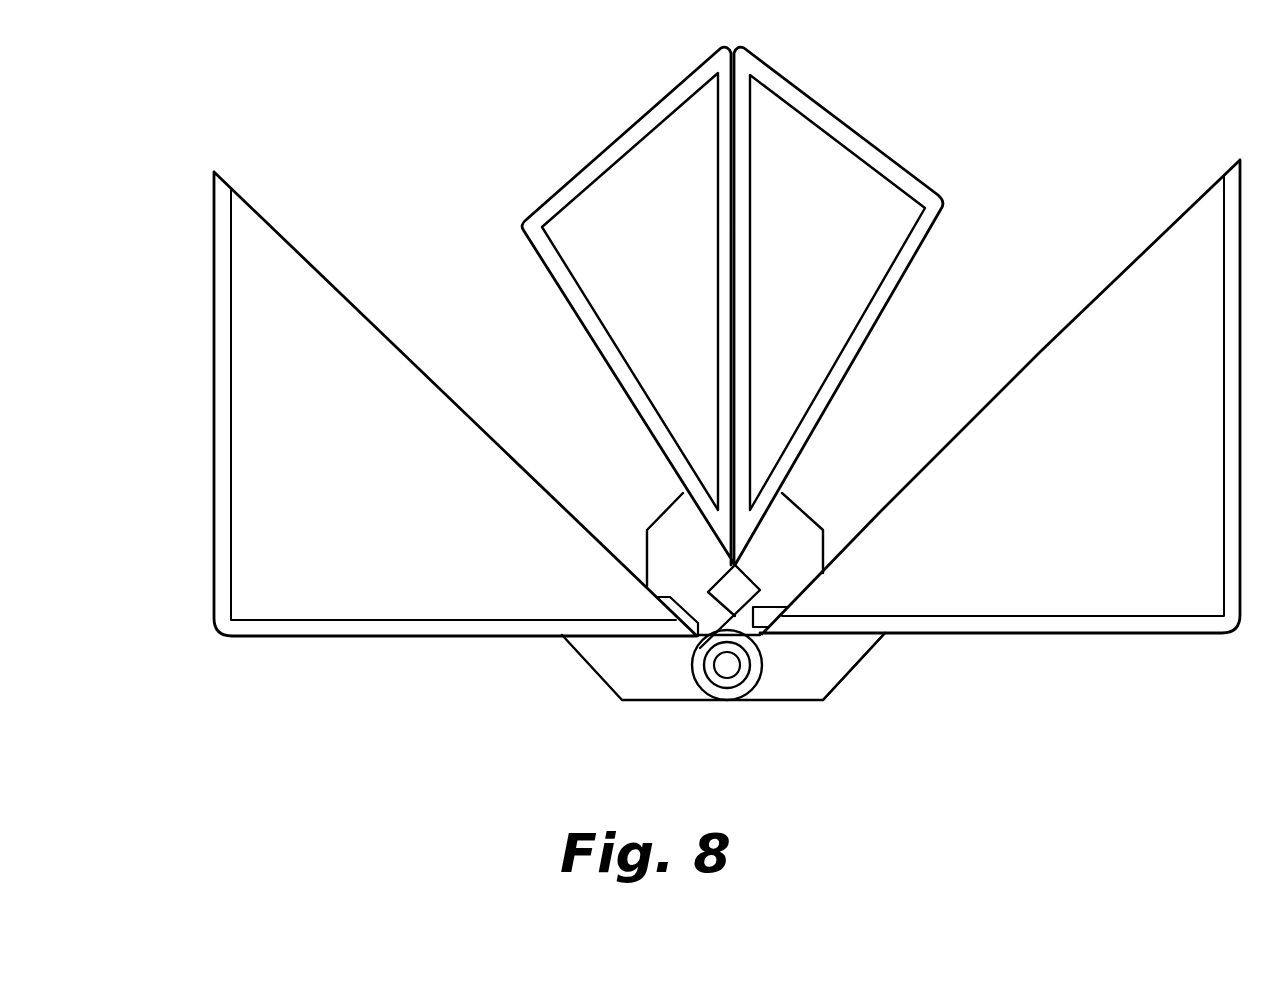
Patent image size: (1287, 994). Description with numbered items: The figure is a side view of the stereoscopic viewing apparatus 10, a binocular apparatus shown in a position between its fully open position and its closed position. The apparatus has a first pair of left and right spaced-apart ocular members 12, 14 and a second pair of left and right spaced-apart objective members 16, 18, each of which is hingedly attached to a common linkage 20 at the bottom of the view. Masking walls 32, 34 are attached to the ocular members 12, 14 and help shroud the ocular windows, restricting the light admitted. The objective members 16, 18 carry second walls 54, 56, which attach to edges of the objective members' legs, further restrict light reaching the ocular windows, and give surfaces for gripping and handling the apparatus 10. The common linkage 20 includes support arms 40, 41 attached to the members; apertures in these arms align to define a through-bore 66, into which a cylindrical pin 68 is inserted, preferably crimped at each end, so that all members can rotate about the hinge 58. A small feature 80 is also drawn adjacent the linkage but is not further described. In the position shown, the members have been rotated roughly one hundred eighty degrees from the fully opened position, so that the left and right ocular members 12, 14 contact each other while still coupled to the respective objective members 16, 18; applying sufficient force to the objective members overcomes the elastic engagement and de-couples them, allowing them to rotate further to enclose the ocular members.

The stereoscopic viewing apparatus 10 is at (382, 126).
The left ocular member 12 is at (597, 138).
The right ocular member 14 is at (847, 113).
The left objective member 16 is at (455, 436).
The right objective member 18 is at (1000, 424).
The common linkage 20 is at (737, 675).
The masking wall 32 is at (578, 322).
The masking wall 34 is at (918, 250).
The support arm 40 is at (665, 510).
The support arm 41 is at (827, 680).
The second wall 54 is at (396, 495).
The second wall 56 is at (1106, 480).
The hinge 58 is at (700, 686).
The through-bore 66 is at (760, 656).
The cylindrical pin 68 is at (738, 678).
The locking tab 80 is at (762, 606).